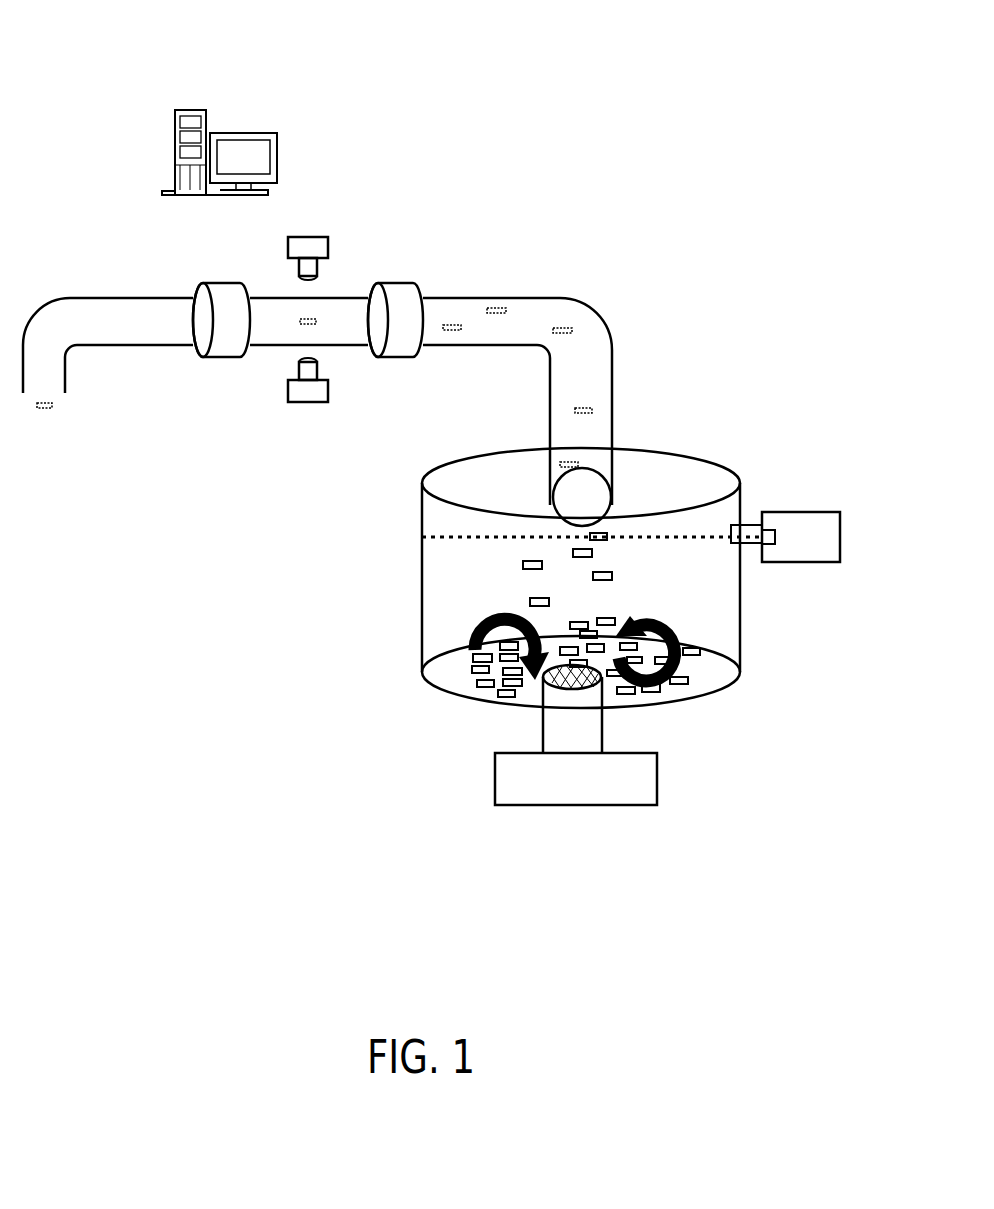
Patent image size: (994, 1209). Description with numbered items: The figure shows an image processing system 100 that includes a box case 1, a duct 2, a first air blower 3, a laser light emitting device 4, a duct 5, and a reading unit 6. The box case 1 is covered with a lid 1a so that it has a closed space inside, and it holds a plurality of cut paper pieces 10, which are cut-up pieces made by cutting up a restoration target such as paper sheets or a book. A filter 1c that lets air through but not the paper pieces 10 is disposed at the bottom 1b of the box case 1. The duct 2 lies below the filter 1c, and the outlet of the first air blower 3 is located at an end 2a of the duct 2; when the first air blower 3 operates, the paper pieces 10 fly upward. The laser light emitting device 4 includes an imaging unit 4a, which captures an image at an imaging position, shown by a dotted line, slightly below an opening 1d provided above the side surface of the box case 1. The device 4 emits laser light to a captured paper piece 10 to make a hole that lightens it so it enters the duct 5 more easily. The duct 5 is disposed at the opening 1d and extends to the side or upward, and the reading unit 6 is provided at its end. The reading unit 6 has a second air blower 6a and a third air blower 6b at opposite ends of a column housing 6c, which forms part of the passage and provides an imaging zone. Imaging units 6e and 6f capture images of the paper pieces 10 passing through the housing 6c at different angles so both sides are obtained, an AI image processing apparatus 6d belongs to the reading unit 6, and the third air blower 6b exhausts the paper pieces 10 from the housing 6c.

The image processing system 100 is at (590, 110).
The box case 1 is at (702, 462).
The lid 1a is at (641, 462).
The bottom 1b is at (718, 674).
The filter 1c is at (588, 702).
The opening 1d is at (596, 487).
The duct 2 is at (541, 714).
The end of the duct 2a is at (543, 748).
The first air blower 3 is at (568, 790).
The laser light emitting device 4 is at (803, 518).
The imaging unit 4a is at (771, 547).
The duct 5 is at (616, 318).
The reading unit 6 is at (362, 350).
The second air blower 6a is at (405, 323).
The third air blower 6b is at (222, 340).
The column housing 6c is at (356, 312).
The AI image processing apparatus 6d is at (186, 110).
The imaging unit 6e is at (306, 237).
The imaging unit 6f is at (320, 404).
The paper pieces 10 is at (50, 410).